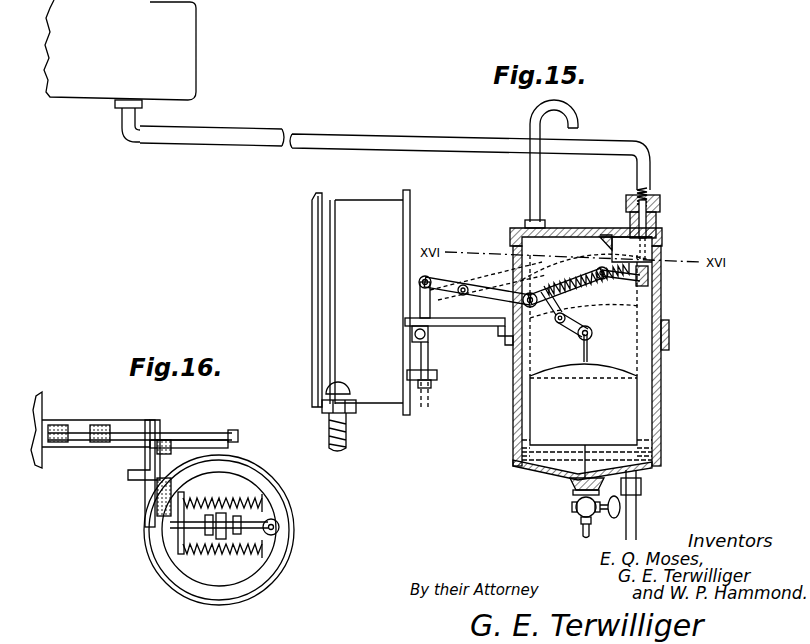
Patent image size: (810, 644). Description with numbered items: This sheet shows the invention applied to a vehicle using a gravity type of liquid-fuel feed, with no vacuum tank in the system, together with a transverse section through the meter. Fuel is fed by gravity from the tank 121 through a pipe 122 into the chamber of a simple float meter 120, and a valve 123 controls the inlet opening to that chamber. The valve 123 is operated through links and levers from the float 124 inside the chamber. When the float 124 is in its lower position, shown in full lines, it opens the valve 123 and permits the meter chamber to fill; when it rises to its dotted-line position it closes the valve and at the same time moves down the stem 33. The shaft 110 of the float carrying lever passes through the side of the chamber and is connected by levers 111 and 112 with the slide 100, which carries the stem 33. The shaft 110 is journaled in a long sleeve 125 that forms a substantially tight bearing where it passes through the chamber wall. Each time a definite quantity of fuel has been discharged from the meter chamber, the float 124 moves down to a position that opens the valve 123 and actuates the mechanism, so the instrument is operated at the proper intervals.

In FIG. 15, the tank 121 is at (120, 60).
In FIG. 15, the pipe 122 is at (243, 146).
In FIG. 15, the valve 123 is at (656, 245).
In FIG. 15, the shaft 110 is at (545, 282).
In FIG. 15, the stem 33 is at (412, 334).
In FIG. 15, the slide 100 is at (428, 362).
In FIG. 15, the float meter 120 is at (661, 386).
In FIG. 15, the float 124 is at (583, 406).
In FIG. 16, the lever 112 is at (162, 434).
In FIG. 16, the lever 111 is at (188, 441).
In FIG. 16, the long sleeve 125 is at (140, 482).